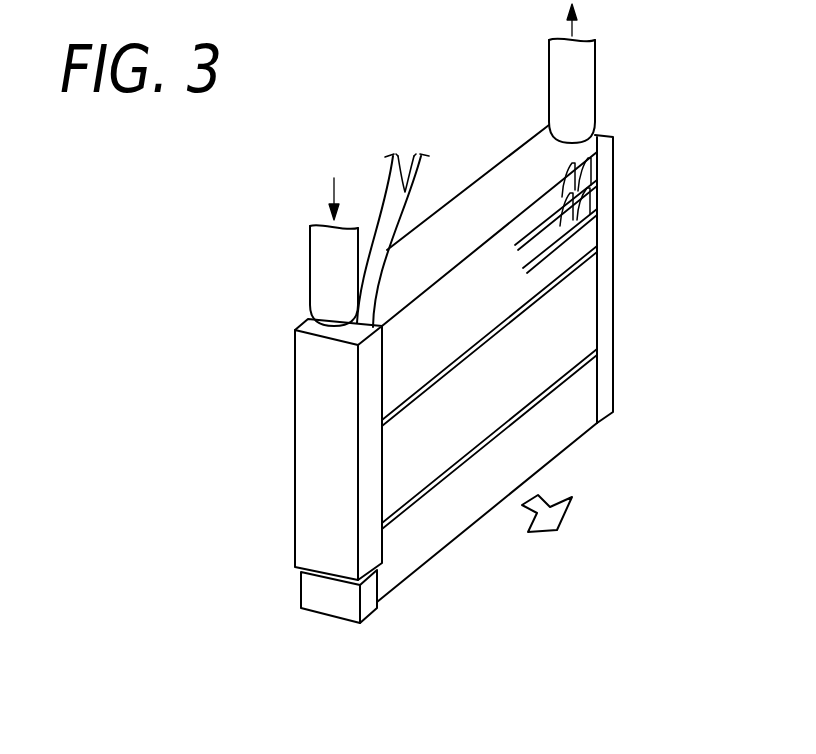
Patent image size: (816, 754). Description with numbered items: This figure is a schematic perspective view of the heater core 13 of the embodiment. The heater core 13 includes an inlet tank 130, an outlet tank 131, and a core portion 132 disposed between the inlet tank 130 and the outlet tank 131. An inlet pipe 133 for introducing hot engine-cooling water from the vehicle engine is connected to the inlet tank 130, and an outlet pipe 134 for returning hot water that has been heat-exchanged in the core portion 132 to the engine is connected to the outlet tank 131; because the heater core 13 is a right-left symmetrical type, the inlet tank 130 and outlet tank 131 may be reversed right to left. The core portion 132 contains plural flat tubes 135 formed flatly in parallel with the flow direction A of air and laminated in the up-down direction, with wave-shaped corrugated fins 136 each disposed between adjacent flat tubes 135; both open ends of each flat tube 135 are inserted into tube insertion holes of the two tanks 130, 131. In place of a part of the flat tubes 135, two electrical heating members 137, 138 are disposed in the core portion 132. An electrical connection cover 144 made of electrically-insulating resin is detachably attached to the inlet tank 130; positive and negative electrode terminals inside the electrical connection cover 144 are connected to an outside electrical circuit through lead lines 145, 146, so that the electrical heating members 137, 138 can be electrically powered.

The heater core 13 is at (478, 170).
The inlet tank 130 is at (306, 594).
The outlet tank 131 is at (616, 352).
The core portion 132 is at (458, 524).
The inlet pipe 133 is at (311, 268).
The outlet pipe 134 is at (575, 90).
The flat tubes 135 is at (540, 268).
The corrugated fins 136 is at (558, 249).
The electrical heating member 137 is at (543, 397).
The electrical heating member 138 is at (527, 303).
The electrical connection cover 144 is at (296, 397).
The lead line 145 is at (388, 163).
The lead line 146 is at (394, 152).
The flow direction of air A is at (566, 512).